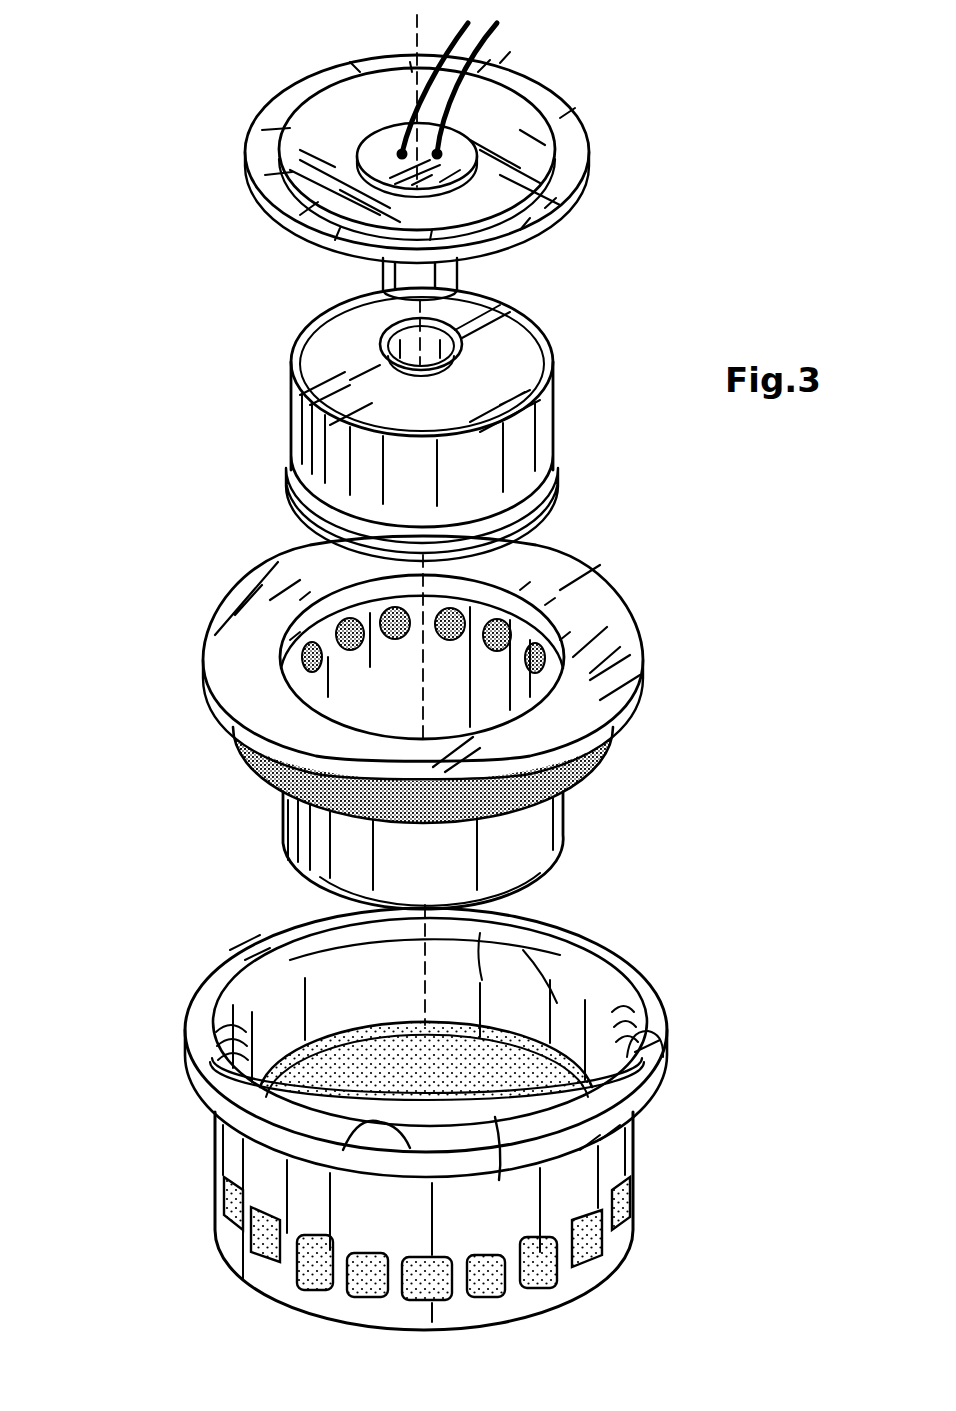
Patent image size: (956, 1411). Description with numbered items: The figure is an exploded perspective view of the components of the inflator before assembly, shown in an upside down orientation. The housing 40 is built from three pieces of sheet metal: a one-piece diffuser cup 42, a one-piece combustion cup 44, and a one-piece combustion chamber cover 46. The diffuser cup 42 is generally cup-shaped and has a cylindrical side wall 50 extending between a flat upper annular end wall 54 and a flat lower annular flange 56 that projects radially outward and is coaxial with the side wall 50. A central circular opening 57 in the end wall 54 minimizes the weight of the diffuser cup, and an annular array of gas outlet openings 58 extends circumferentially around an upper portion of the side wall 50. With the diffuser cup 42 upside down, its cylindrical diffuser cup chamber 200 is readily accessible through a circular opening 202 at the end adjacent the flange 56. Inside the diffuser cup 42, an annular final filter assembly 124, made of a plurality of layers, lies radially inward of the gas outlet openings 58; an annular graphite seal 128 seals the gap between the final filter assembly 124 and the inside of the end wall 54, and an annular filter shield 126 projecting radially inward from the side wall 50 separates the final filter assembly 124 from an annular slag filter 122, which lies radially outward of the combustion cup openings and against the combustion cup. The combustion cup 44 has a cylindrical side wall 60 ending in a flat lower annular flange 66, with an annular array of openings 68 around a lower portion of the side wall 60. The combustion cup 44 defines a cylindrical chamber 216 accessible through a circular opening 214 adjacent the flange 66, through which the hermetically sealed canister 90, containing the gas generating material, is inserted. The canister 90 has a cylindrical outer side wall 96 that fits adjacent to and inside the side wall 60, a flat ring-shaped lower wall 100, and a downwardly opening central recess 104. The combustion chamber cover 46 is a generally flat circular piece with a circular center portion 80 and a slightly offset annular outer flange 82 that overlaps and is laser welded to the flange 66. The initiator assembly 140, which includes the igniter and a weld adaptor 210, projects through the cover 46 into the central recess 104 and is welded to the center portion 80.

The combustion chamber cover 46 is at (238, 164).
The annular outer flange 82 is at (573, 143).
The circular center portion 80 is at (507, 178).
The weld adaptor 210 is at (378, 158).
The initiator assembly 140 is at (366, 274).
The canister 90 is at (256, 461).
The lower wall 100 is at (512, 353).
The central recess 104 is at (457, 338).
The cylindrical outer side wall 96 is at (510, 457).
The housing 40 is at (148, 653).
The lower annular flange 66 is at (603, 675).
The circular opening 214 is at (490, 597).
The cylindrical chamber 216 is at (490, 680).
The openings 68 is at (362, 640).
The combustion cup 44 is at (228, 775).
The slag filter 122 is at (605, 752).
The cylindrical side wall 60 is at (530, 837).
The diffuser cup 42 is at (191, 1170).
The lower annular flange 56 is at (640, 995).
The diffuser cup chamber 200 is at (565, 990).
The circular opening 202 is at (663, 1057).
The filter shield 126 is at (280, 1055).
The graphite seal 128 is at (482, 1103).
The central circular opening 57 is at (343, 1150).
The upper annular end wall 54 is at (499, 1180).
The cylindrical side wall 50 is at (617, 1153).
The final filter assembly 124 is at (461, 1127).
The gas outlet openings 58 is at (640, 1208).